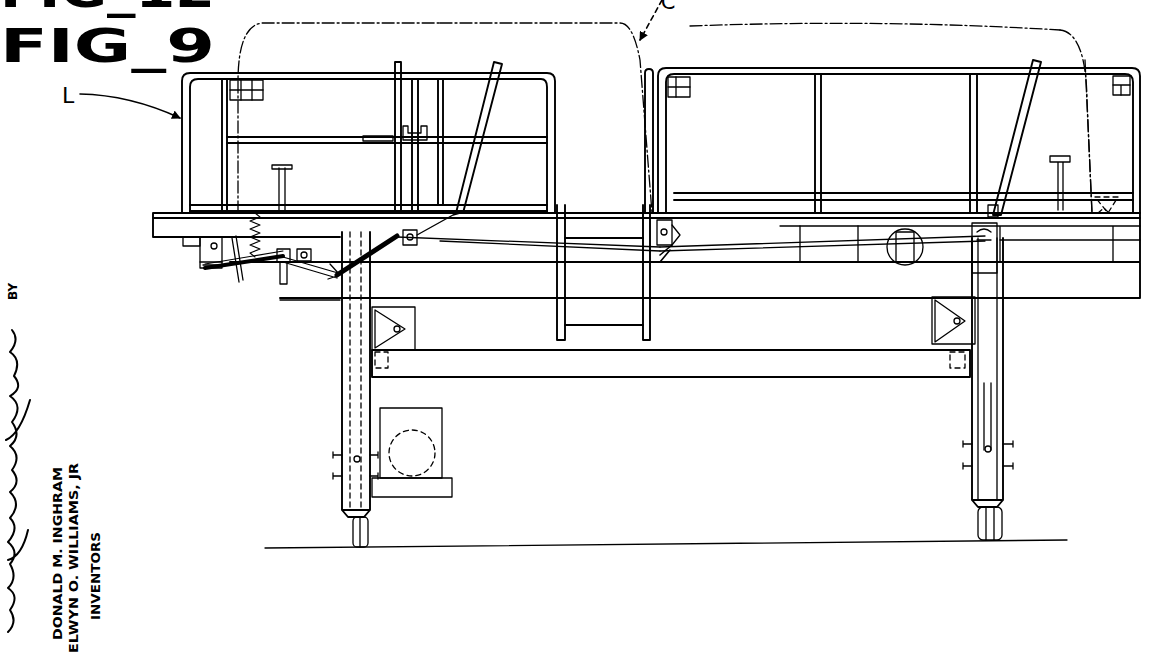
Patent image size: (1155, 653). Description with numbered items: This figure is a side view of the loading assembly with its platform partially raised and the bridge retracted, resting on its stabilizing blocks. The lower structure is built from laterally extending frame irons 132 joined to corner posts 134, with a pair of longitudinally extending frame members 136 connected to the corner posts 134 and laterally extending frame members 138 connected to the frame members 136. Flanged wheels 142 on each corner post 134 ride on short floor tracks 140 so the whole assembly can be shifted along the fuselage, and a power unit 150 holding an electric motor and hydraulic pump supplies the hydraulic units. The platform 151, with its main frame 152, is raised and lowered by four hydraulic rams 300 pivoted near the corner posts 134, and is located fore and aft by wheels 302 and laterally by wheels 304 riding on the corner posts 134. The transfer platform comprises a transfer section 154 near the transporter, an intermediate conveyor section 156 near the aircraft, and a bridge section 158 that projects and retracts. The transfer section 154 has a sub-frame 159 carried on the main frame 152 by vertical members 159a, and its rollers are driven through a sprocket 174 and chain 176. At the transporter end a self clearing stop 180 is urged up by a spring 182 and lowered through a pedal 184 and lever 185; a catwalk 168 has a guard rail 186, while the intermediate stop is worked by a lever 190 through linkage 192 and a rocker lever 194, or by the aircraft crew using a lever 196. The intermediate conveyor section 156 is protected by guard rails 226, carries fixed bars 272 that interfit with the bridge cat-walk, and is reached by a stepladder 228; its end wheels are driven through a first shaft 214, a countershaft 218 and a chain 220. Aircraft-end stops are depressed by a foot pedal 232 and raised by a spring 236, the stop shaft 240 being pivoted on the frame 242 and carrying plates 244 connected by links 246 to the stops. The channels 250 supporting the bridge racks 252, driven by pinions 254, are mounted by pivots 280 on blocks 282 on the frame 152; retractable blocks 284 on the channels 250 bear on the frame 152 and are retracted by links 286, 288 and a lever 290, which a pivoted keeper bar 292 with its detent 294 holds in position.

The frame irons 132 is at (378, 450).
The corner posts 134 is at (350, 412).
The frame members 136 is at (750, 358).
The frame members 138 is at (390, 364).
The tracks 140 is at (358, 549).
The wheels 142 is at (354, 527).
The power unit 150 is at (432, 420).
The platform 151 is at (290, 300).
The main frame 152 is at (757, 287).
The transfer section 154 is at (1020, 228).
The intermediate conveyor section 156 is at (436, 242).
The bridge section 158 is at (182, 233).
The sub-frame 159 is at (860, 212).
The vertical members 159a is at (705, 245).
The catwalk 168 is at (757, 205).
The sprocket 174 is at (1118, 0).
The chain 176 is at (965, 255).
The self clearing stop 180 is at (1102, 197).
The spring 182 is at (1100, 220).
The pedal 184 is at (1055, 154).
The lever 185 is at (1072, 212).
The guard rail 186 is at (856, 66).
The lever 190 is at (1026, 85).
The linkage 192 is at (810, 248).
The rocker lever 194 is at (690, 210).
The lever 196 is at (481, 125).
The first shaft 214 is at (339, 106).
The countershaft 218 is at (516, 106).
The chain 220 is at (748, 15).
The guard rails 226 is at (322, 73).
The stepladder 228 is at (650, 310).
The foot pedal 232 is at (290, 166).
The spring 236 is at (262, 216).
The stop shaft 240 is at (212, 272).
The frame 242 is at (236, 240).
The plates 244 is at (215, 266).
The links 246 is at (205, 249).
The channels 250 is at (487, 232).
The racks 252 is at (185, 241).
The pinions 254 is at (215, 259).
The fixed bars 272 is at (318, 208).
The pivots 280 is at (658, 235).
The blocks 282 is at (670, 258).
The retractable blocks 284 is at (306, 262).
The link 286 is at (322, 270).
The link 288 is at (375, 253).
The lever 290 is at (395, 92).
The keeper bar 292 is at (297, 138).
The detent 294 is at (370, 138).
The hydraulic rams 300 is at (350, 391).
The wheels 302 is at (382, 322).
The wheels 304 is at (350, 365).